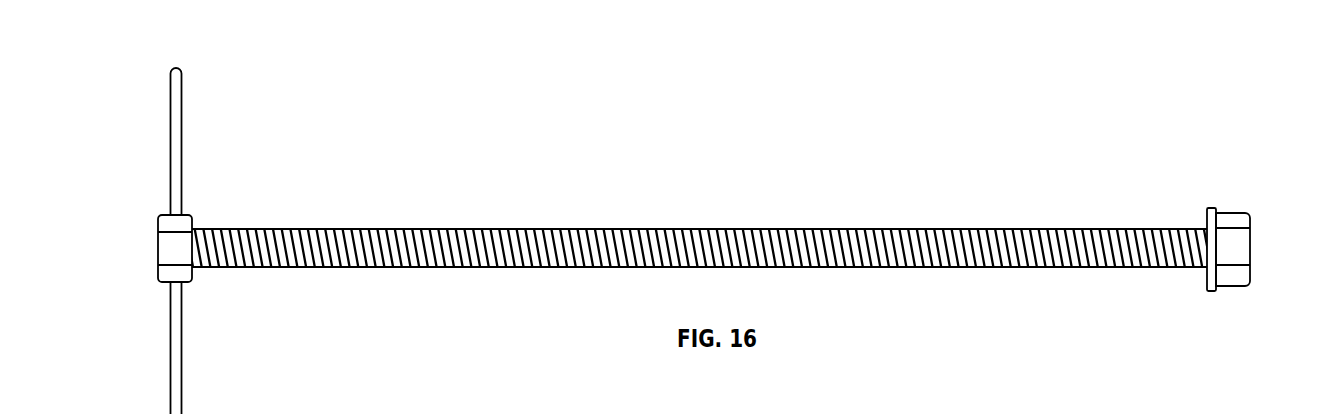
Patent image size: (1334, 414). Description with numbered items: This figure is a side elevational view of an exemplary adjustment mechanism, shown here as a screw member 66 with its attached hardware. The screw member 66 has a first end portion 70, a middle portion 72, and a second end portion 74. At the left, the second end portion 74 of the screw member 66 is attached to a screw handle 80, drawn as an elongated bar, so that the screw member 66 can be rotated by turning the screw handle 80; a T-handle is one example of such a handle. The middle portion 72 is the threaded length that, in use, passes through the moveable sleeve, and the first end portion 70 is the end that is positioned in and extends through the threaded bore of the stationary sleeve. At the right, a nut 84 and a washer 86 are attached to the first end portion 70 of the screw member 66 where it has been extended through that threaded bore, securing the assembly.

The screw member 66 is at (1152, 102).
The first end portion 70 is at (698, 262).
The middle portion 72 is at (549, 228).
The second end portion 74 is at (202, 268).
The screw handle 80 is at (170, 126).
The nut 84 is at (1257, 225).
The washer 86 is at (1200, 221).